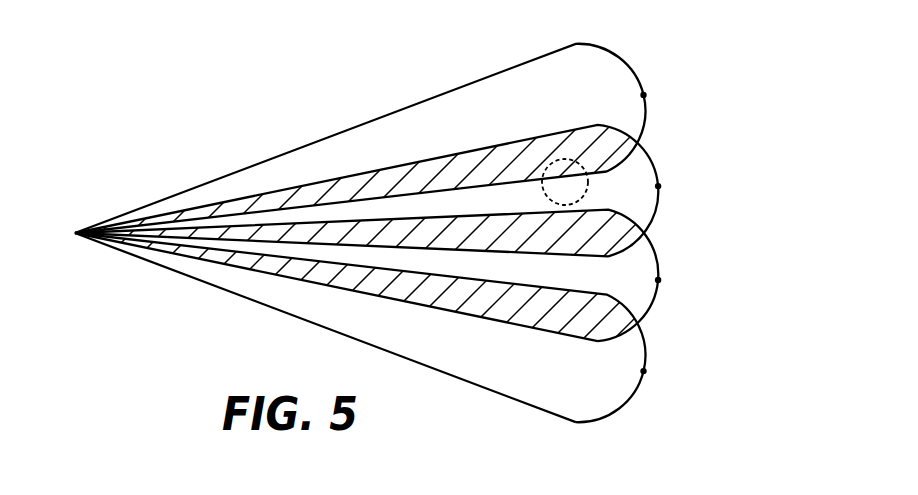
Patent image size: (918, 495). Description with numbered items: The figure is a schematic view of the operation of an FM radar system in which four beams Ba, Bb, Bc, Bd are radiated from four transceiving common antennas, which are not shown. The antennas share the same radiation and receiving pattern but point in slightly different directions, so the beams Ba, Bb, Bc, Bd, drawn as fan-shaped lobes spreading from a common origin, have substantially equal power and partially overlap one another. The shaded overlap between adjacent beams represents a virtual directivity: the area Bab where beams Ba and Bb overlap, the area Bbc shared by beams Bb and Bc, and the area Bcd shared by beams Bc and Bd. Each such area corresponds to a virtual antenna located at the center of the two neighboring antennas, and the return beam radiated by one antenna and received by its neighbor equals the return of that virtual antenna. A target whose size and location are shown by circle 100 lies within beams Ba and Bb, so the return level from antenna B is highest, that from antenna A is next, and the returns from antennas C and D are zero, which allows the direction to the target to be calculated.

The beam Ba is at (627, 57).
The beam Bb is at (657, 175).
The beam Bc is at (658, 263).
The beam Bd is at (630, 405).
The virtual directivity Bab is at (597, 140).
The virtual directivity Bbc is at (620, 237).
The virtual directivity Bcd is at (610, 320).
The circle 100 is at (588, 166).